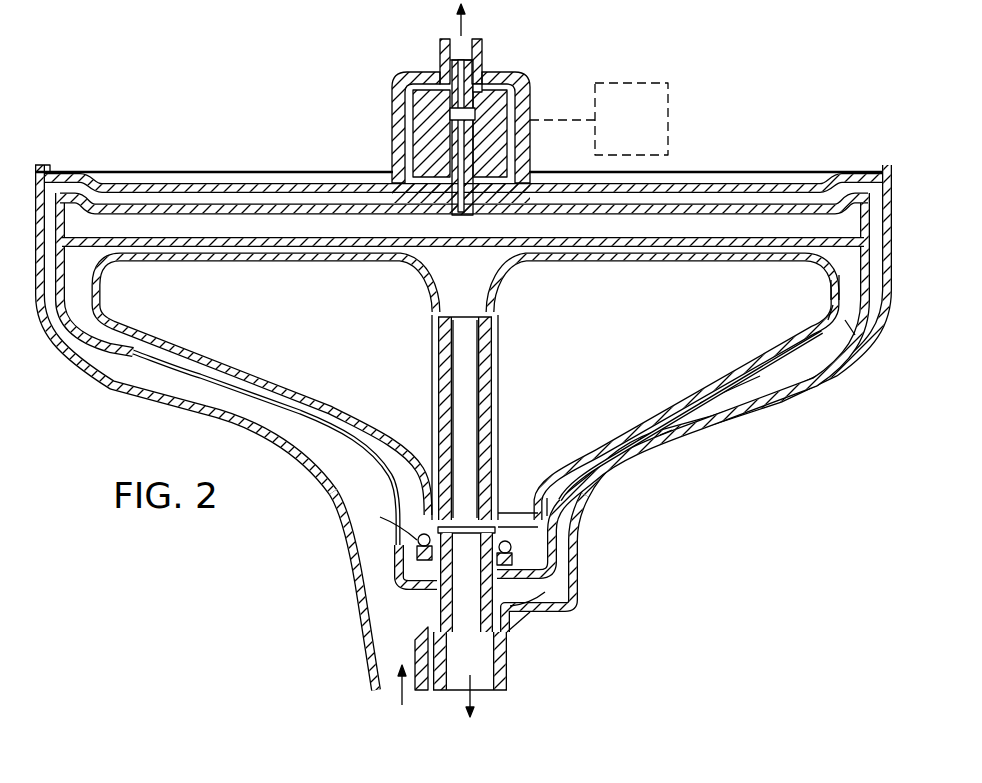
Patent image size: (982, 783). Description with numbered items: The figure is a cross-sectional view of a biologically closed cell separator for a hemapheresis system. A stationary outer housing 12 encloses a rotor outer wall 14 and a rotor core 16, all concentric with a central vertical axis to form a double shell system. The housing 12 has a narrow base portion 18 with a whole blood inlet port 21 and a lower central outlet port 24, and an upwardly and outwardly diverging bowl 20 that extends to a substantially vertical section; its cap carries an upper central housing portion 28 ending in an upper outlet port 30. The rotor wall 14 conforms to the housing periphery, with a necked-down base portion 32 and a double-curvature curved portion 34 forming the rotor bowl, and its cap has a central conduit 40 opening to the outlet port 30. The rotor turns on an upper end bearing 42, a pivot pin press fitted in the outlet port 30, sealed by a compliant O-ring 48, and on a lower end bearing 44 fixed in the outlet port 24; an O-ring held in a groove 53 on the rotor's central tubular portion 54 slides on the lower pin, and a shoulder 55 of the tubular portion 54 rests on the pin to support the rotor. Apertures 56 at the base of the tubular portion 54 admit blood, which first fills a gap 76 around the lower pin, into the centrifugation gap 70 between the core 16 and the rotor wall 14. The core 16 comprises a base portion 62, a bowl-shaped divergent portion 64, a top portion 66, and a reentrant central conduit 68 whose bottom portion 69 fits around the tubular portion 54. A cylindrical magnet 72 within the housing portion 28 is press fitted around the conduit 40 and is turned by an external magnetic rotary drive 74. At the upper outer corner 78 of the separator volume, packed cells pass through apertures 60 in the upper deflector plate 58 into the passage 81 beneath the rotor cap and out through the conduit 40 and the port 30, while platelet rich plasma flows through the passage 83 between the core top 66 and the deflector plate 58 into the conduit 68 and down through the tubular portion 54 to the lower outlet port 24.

The stationary outer housing 12 is at (850, 374).
The rotor outer wall 14 is at (660, 423).
The rotor core 16 is at (852, 305).
The base portion 18 is at (370, 643).
The bowl 20 is at (753, 402).
The inlet port 21 is at (398, 663).
The lower central outlet port 24 is at (500, 672).
The upper central housing portion 28 is at (528, 115).
The upper outlet port 30 is at (455, 45).
The base portion 32 is at (578, 535).
The outwardly and upwardly curved portion 34 is at (713, 392).
The central conduit 40 is at (458, 217).
The upper end bearing 42 is at (477, 70).
The lower end bearing 44 is at (533, 627).
The compliant O-ring 48 is at (483, 90).
The groove 53 is at (433, 543).
The central tubular portion 54 is at (490, 417).
The shoulder 55 is at (433, 490).
The apertures 56 is at (565, 578).
The upper deflector plate 58 is at (845, 258).
The apertures 60 is at (105, 243).
The base portion 62 is at (552, 507).
The upwardly and outwardly divergent portion 64 is at (607, 400).
The top portion 66 is at (465, 388).
The reentrant central conduit 68 is at (470, 347).
The bottom portion 69 is at (500, 456).
The centrifugation gap 70 is at (837, 327).
The cylindrical magnet 72 is at (427, 130).
The magnetic-type rotary drive 74 is at (625, 78).
The gap 76 is at (550, 605).
The upper and outermost corner of the separator volume 78 is at (843, 270).
The passage 81 is at (752, 223).
The passage 83 is at (683, 252).